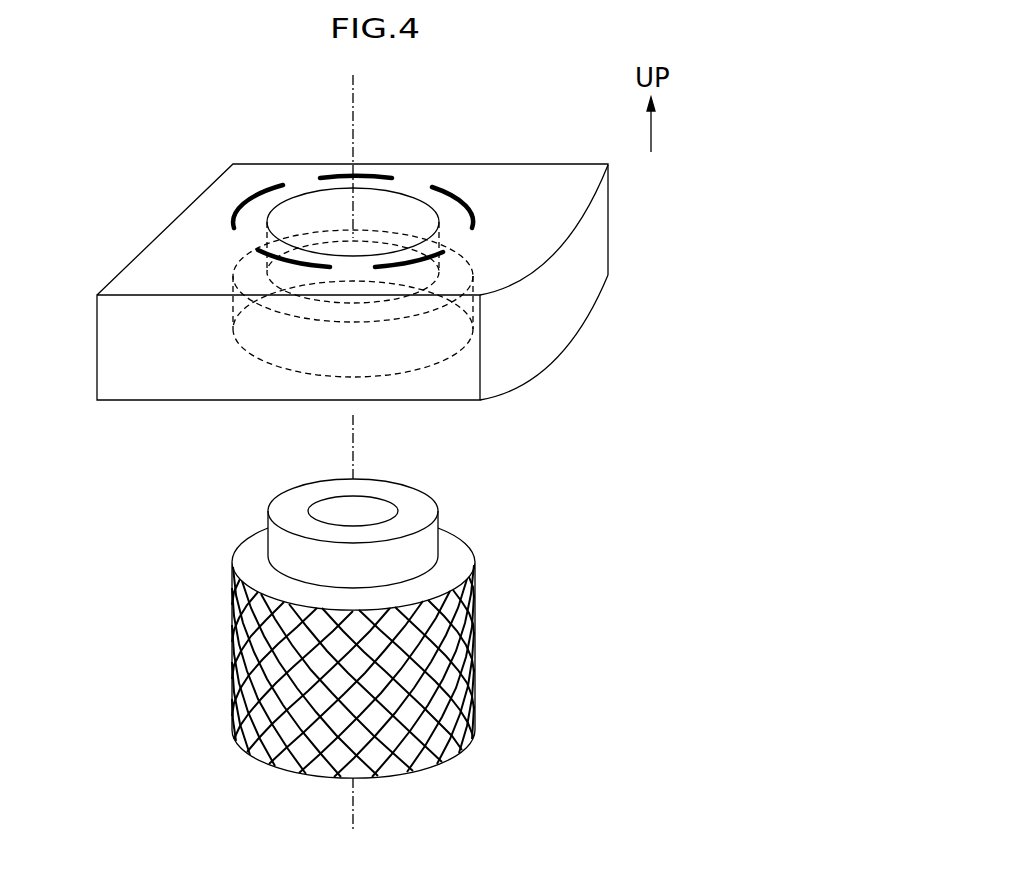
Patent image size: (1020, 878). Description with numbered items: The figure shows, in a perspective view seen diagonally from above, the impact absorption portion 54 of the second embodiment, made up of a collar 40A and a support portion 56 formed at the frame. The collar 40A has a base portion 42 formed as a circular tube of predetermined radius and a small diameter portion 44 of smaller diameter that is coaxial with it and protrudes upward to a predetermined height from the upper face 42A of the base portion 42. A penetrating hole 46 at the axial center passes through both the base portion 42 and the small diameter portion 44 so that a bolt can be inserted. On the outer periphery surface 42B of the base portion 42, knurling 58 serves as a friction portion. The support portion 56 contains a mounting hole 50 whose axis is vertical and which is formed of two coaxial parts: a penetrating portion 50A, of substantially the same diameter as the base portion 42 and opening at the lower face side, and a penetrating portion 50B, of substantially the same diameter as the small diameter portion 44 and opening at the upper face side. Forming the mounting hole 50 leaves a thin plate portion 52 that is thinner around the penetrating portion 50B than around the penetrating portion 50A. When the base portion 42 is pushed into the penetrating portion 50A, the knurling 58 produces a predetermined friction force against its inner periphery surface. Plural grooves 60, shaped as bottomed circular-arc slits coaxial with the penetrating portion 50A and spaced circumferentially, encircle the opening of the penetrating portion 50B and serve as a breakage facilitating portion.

The collar 40A is at (527, 573).
The base portion 42 is at (477, 670).
The upper face 42A is at (453, 562).
The outer periphery surface 42B is at (434, 671).
The small diameter portion 44 is at (440, 533).
The penetrating hole 46 is at (377, 508).
The mounting hole 50 is at (684, 228).
The penetrating portion 50A is at (400, 318).
The penetrating portion 50B is at (440, 215).
The thin plate portion 52 is at (415, 188).
The impact absorption portion 54 is at (764, 268).
The support portion 56 is at (612, 218).
The knurling 58 is at (474, 615).
The grooves 60 is at (263, 189).